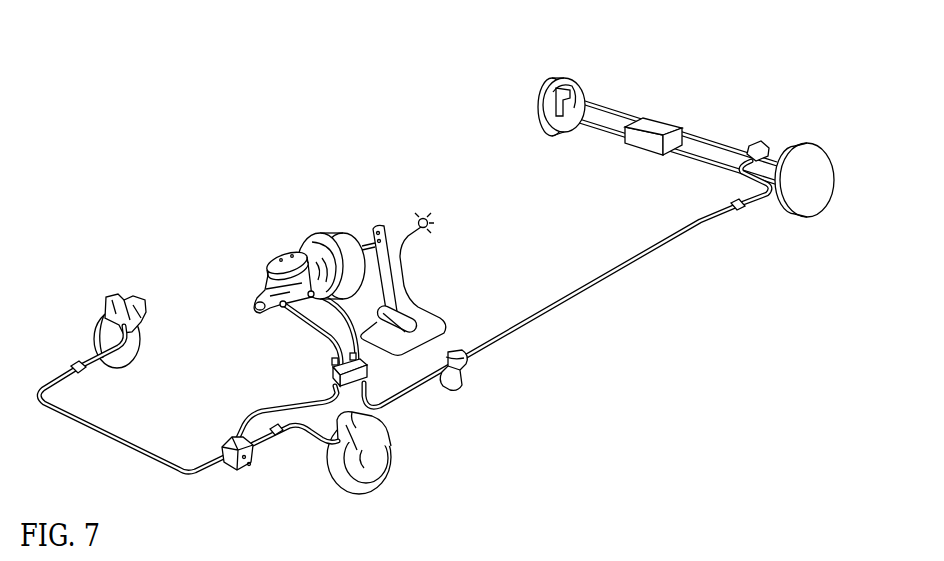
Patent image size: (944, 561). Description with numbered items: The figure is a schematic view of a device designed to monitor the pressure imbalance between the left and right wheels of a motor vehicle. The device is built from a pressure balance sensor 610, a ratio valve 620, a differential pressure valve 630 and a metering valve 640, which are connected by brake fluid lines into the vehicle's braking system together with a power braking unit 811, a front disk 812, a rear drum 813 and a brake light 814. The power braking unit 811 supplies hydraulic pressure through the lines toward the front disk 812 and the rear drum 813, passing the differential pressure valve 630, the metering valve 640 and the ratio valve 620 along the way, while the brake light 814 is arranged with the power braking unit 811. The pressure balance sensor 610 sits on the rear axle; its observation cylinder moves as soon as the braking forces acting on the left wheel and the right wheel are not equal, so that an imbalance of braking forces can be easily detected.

The pressure balance sensor 610 is at (641, 146).
The ratio valve 620 is at (466, 381).
The differential pressure valve 630 is at (330, 372).
The metering valve 640 is at (233, 476).
The power braking unit 811 is at (314, 232).
The front disk 812 is at (147, 341).
The rear drum 813 is at (578, 78).
The brake light 814 is at (420, 208).